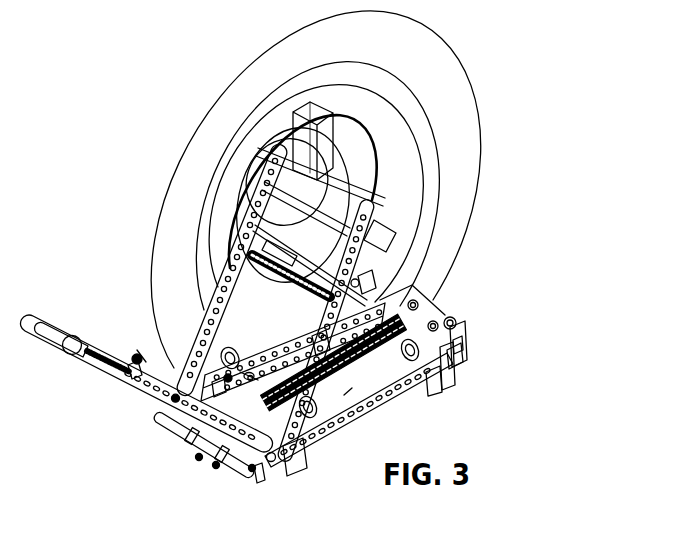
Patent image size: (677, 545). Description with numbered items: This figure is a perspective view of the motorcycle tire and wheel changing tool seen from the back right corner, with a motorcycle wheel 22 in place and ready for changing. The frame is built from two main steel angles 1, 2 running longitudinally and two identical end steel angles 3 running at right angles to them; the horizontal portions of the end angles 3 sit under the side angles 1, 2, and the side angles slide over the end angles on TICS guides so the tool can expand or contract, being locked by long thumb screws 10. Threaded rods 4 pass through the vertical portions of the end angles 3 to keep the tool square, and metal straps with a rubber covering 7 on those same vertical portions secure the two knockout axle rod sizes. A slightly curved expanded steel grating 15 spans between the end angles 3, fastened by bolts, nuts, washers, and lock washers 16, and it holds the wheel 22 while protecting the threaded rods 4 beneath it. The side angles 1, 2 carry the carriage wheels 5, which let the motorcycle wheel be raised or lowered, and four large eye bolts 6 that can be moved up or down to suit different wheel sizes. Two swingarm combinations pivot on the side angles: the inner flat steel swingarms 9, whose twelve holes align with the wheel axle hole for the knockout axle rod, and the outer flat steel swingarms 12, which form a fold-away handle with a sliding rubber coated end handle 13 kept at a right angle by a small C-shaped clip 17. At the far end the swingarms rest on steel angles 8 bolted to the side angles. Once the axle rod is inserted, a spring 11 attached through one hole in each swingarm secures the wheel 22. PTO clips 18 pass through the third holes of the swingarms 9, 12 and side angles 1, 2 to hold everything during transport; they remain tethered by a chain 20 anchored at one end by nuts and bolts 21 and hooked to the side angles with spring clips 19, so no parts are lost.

The main steel angle 1 is at (330, 420).
The main steel angle 2 is at (231, 351).
The end steel angle 3 is at (257, 470).
The threaded rod 4 is at (198, 455).
The carriage wheel 5 is at (304, 468).
The eye bolt 6 is at (316, 405).
The metal strap with rubber covering 7 is at (188, 437).
The steel angle 8 is at (460, 352).
The inner flat steel swingarm 9 is at (378, 215).
The long thumb screw 10 is at (473, 245).
The spring 11 is at (293, 244).
The flat steel swingarm 12 is at (55, 320).
The rubber coated end handle 13 is at (82, 345).
The expanded steel grating 15 is at (352, 388).
The bolts, nuts, washers, and lock washers 16 is at (412, 305).
The C-shaped clip 17 is at (137, 356).
The PTO clip 18 is at (365, 280).
The spring clip 19 is at (450, 383).
The chain 20 is at (385, 408).
The nuts and bolts 21 is at (254, 376).
The wheel 22 is at (180, 212).